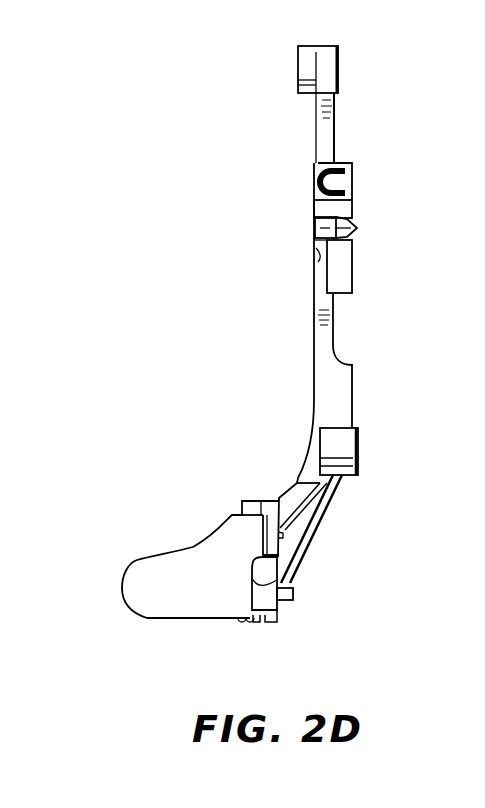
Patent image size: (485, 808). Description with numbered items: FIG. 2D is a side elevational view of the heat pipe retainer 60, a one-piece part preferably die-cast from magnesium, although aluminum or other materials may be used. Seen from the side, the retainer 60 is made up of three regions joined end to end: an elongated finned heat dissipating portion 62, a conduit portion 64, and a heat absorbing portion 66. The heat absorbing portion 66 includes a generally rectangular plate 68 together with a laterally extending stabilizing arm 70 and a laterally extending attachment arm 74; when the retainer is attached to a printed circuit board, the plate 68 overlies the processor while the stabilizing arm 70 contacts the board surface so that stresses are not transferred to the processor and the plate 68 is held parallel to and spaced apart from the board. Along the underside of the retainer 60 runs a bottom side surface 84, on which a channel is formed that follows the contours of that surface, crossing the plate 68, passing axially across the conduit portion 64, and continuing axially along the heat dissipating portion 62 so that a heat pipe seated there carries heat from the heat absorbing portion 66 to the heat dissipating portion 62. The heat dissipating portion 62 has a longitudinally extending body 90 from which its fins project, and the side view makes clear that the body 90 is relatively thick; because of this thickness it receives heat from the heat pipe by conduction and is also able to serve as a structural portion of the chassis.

The heat pipe retainer 60 is at (306, 393).
The heat dissipating portion 62 is at (128, 558).
The conduit portion 64 is at (340, 515).
The heat absorbing portion 66 is at (364, 282).
The plate 68 is at (353, 207).
The stabilizing arm 70 is at (322, 227).
The attachment arm 74 is at (316, 132).
The bottom side surface 84 is at (353, 402).
The body 90 is at (162, 607).